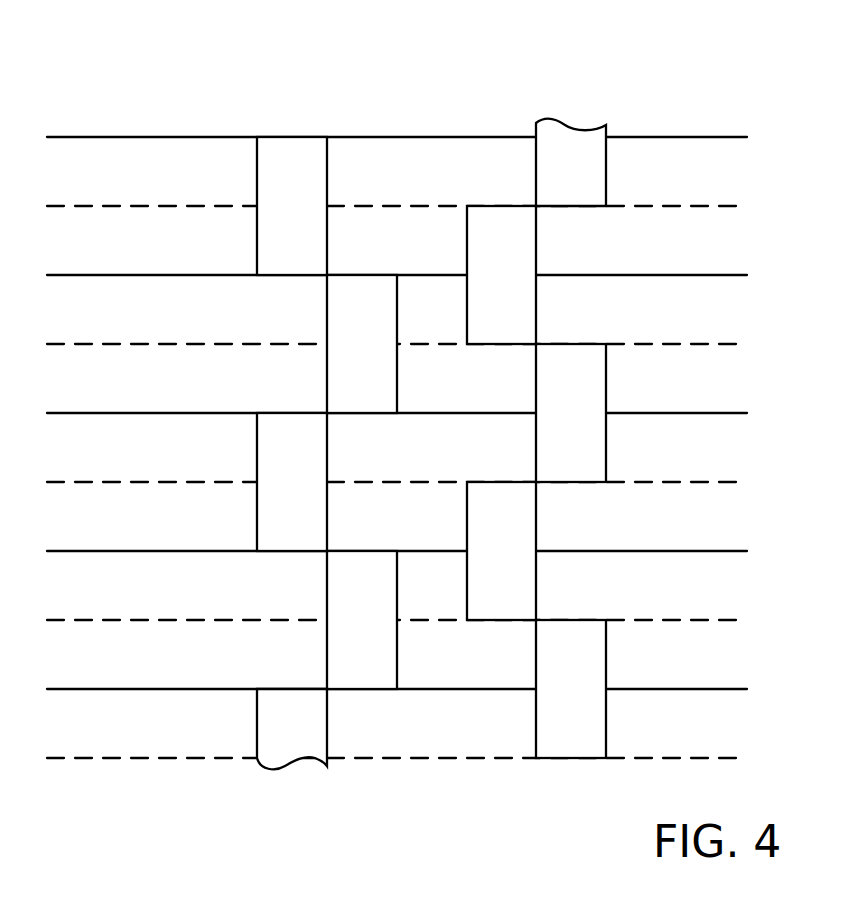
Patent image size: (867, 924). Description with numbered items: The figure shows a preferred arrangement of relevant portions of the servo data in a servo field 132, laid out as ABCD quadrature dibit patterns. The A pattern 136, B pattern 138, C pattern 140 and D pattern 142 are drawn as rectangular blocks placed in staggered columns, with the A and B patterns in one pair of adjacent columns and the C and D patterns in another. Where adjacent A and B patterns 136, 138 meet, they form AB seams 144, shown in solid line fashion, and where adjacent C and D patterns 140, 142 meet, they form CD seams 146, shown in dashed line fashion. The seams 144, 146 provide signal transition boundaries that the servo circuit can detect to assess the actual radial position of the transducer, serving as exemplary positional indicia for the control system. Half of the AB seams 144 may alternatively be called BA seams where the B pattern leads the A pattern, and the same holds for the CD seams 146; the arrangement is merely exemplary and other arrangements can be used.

The servo field 132 is at (397, 404).
The A pattern 136 is at (292, 145).
The B pattern 138 is at (363, 283).
The C pattern 140 is at (500, 216).
The D pattern 142 is at (569, 137).
The AB seam 144 is at (108, 137).
The CD seam 146 is at (110, 210).